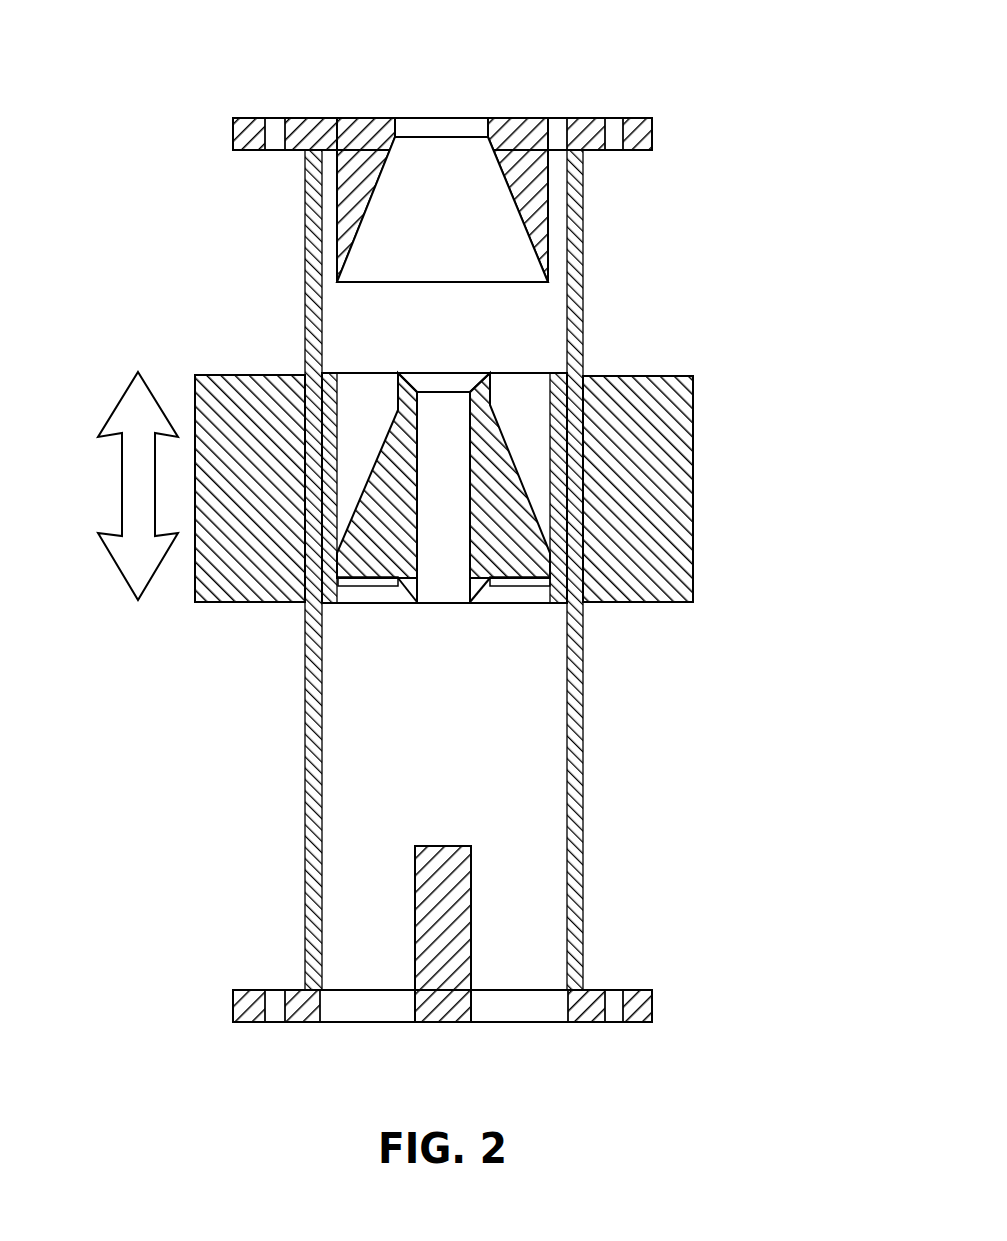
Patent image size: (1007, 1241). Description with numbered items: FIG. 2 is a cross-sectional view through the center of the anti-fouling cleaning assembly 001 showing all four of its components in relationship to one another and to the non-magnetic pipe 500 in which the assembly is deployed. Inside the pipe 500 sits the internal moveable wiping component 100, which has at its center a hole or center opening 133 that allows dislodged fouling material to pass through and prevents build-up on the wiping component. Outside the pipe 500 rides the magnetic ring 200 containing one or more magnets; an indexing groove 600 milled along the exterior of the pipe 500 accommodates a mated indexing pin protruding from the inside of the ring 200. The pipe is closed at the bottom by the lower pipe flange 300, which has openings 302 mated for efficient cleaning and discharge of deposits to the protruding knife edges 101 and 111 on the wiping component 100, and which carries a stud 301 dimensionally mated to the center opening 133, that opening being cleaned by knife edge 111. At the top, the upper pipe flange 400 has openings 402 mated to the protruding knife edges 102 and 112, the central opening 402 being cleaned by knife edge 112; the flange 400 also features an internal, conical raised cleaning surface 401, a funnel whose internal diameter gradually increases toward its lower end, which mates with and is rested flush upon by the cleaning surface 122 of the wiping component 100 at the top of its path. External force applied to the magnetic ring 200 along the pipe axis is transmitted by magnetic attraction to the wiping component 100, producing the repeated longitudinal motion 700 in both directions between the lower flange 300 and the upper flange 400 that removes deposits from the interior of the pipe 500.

The anti-fouling cleaning assembly 001 is at (660, 262).
The moveable wiping component 100 is at (456, 528).
The knife edge 101 is at (565, 604).
The knife edge 102 is at (567, 372).
The knife edge 111 is at (470, 605).
The knife edge 112 is at (490, 374).
The cleaning surface 122 is at (382, 443).
The center opening 133 is at (442, 427).
The magnetic ring 200 is at (693, 495).
The lower pipe flange 300 is at (233, 1010).
The stud 301 is at (417, 855).
The openings 302 is at (520, 1005).
The upper pipe flange 400 is at (233, 128).
The conical raised cleaning surface 401 is at (375, 192).
The openings 402 is at (557, 118).
The non-magnetic pipe 500 is at (583, 733).
The indexing groove 600 is at (584, 603).
The longitudinal motion 700 is at (117, 486).